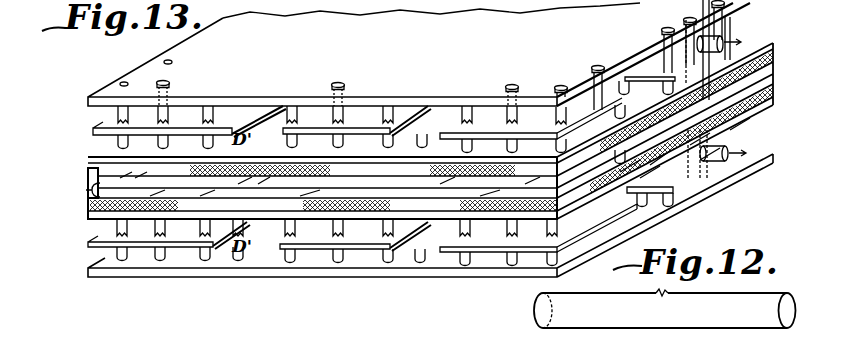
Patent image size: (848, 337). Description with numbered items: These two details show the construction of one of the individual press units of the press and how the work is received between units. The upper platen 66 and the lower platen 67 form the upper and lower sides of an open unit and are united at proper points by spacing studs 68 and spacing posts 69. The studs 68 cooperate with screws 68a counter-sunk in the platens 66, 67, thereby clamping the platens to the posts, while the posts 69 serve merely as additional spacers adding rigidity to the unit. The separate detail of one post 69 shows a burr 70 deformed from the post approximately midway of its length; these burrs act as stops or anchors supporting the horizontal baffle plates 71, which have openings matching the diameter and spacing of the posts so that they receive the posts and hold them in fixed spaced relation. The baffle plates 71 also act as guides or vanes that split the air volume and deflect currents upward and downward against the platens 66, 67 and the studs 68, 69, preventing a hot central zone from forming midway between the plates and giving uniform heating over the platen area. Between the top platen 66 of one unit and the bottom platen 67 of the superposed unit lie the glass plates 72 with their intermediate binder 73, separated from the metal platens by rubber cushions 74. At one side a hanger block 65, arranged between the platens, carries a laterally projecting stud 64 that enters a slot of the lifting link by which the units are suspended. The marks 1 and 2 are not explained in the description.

In FIG. 13, the laterally projecting stud 64 is at (740, 38).
In FIG. 13, the hanger block 65 is at (725, 60).
In FIG. 13, the upper platen 66 is at (786, 118).
In FIG. 13, the lower platen 67 is at (352, 287).
In FIG. 13, the spacing stud 68 is at (166, 113).
In FIG. 13, the screw 68a is at (168, 80).
In FIG. 13, the spacing post 69 is at (233, 122).
In FIG. 12, the spacing post 69 is at (665, 310).
In FIG. 12, the burr 70 is at (660, 298).
In FIG. 13, the baffle plate 71 is at (648, 195).
In FIG. 13, the glass plate 72 is at (78, 191).
In FIG. 13, the intermediate binder 73 is at (95, 165).
In FIG. 13, the cushion 74 is at (128, 174).
In FIG. 13, the section line 1 is at (462, 334).
In FIG. 13, the section line 2 is at (403, 336).